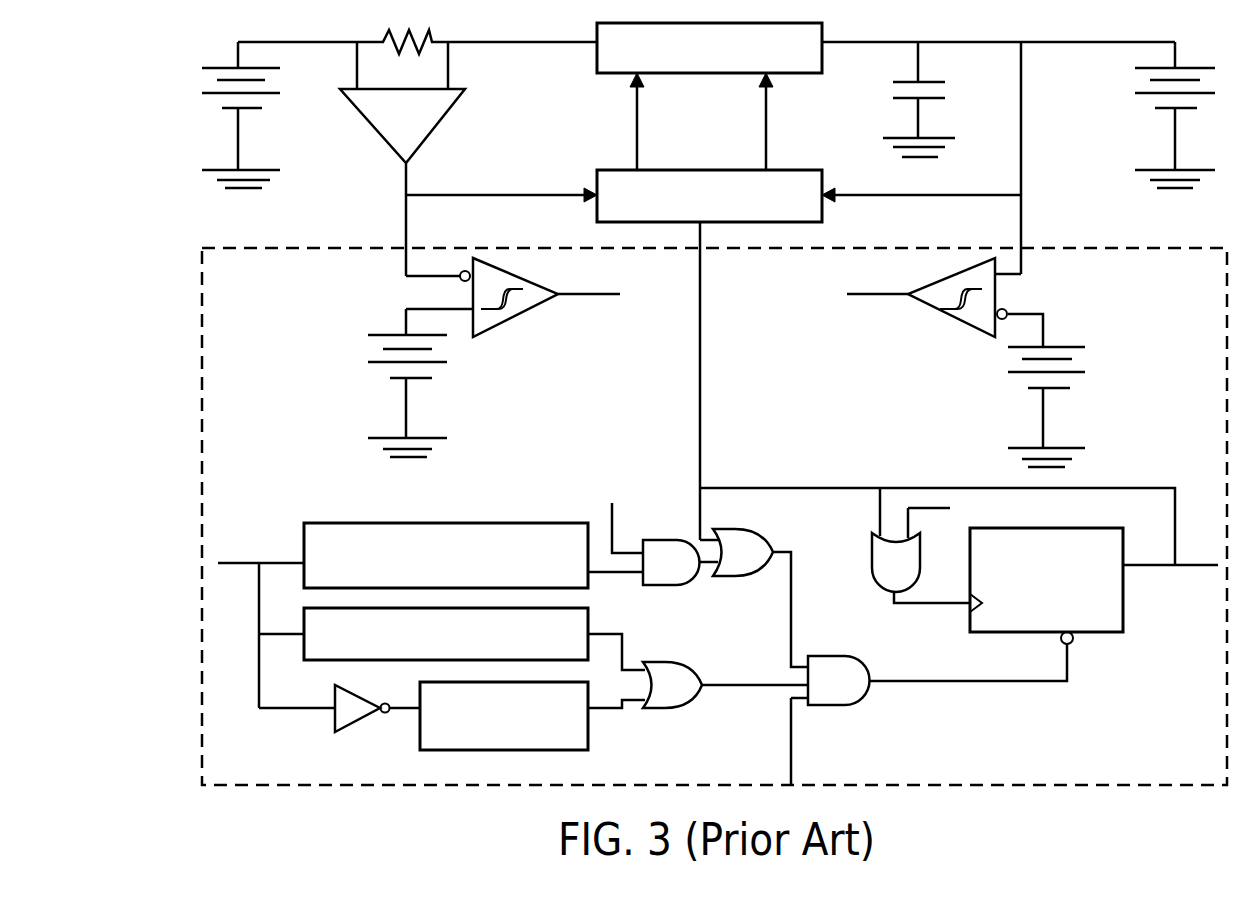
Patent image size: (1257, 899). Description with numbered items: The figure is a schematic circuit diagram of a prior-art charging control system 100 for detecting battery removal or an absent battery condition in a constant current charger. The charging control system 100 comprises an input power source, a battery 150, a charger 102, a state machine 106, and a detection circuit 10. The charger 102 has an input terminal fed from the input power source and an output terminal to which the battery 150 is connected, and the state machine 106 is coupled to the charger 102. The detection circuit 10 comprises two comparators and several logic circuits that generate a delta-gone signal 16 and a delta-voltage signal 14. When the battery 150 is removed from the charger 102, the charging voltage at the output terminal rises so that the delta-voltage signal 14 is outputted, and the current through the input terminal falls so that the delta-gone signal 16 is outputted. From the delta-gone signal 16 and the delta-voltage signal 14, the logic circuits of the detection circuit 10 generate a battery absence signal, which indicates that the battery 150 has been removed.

The charging control system 100 is at (172, 382).
The charger 102 is at (614, 77).
The state machine 106 is at (782, 169).
The battery 150 is at (1190, 62).
The ΔGONE signal 16 is at (572, 292).
The ΔVCH signal 14 is at (896, 290).
The detection circuit 10 is at (1207, 772).